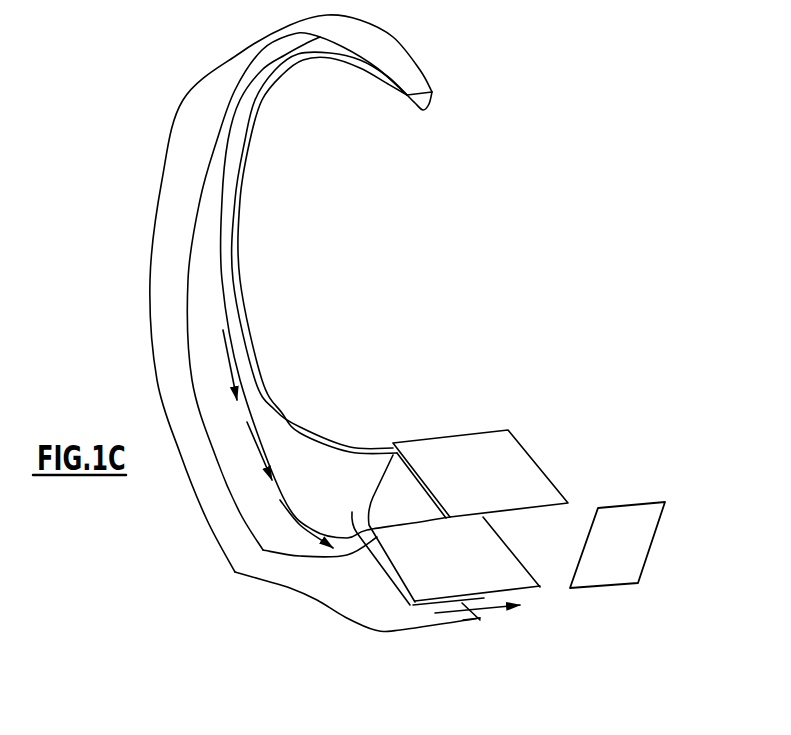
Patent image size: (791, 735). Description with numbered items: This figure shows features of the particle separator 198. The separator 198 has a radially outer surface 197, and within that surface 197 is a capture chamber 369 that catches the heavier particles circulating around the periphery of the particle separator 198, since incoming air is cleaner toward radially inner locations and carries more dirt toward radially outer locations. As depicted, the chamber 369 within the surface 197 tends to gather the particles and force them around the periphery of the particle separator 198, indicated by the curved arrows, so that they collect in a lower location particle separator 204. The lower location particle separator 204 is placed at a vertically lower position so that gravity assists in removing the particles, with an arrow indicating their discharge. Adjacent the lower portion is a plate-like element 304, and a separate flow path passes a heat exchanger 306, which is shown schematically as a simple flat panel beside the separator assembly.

The radially outer surface 197 is at (248, 63).
The capture chamber 369 is at (297, 53).
The particle separator 198 is at (359, 335).
The plate 304 is at (477, 557).
The heat exchanger 306 is at (630, 557).
The lower location particle separator 204 is at (480, 618).